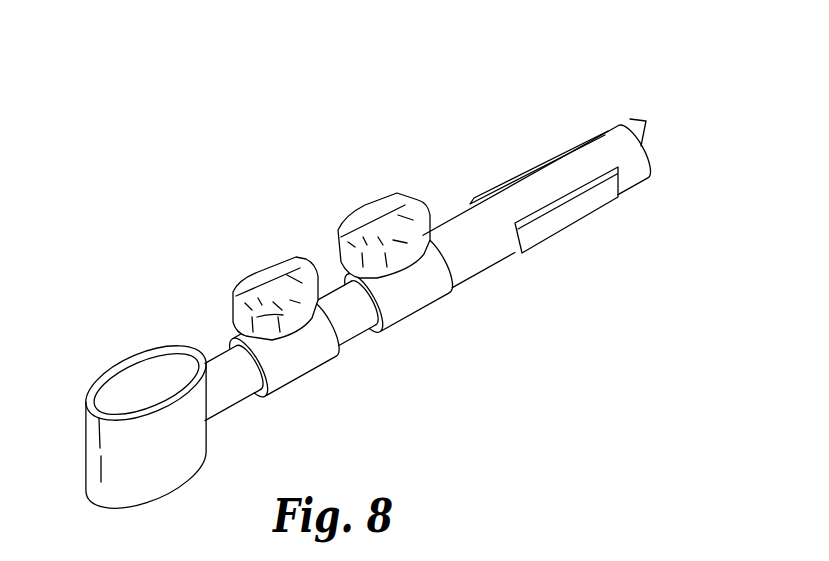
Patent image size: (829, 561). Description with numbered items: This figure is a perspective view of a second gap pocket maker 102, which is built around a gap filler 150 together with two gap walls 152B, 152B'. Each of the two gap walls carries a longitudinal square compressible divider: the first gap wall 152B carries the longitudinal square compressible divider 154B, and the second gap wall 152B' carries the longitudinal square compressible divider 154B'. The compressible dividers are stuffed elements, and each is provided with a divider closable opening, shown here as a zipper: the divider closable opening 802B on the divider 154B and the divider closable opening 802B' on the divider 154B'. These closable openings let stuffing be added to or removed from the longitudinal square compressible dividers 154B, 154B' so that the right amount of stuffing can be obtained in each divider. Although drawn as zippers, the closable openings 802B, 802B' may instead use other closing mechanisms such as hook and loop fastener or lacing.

The second gap pocket maker 102 is at (182, 68).
The gap filler 150 is at (580, 198).
The gap wall 152B is at (249, 296).
The gap wall 152B' is at (387, 204).
The longitudinal square compressible divider 154B is at (333, 350).
The longitudinal square compressible divider 154B' is at (453, 293).
The divider closable opening 802B is at (188, 298).
The divider closable opening 802B' is at (434, 165).